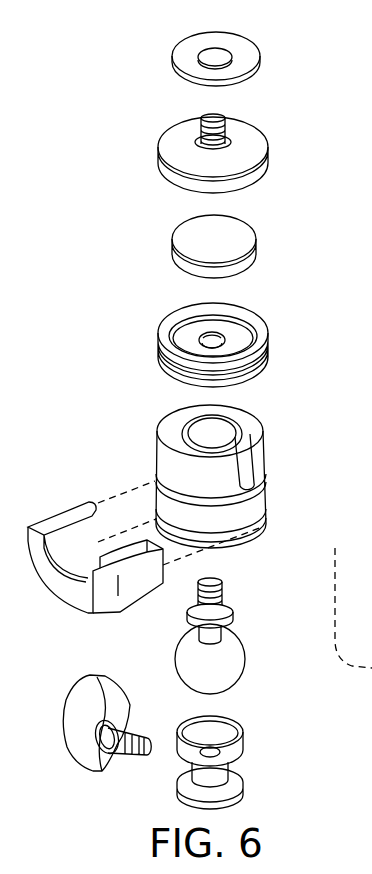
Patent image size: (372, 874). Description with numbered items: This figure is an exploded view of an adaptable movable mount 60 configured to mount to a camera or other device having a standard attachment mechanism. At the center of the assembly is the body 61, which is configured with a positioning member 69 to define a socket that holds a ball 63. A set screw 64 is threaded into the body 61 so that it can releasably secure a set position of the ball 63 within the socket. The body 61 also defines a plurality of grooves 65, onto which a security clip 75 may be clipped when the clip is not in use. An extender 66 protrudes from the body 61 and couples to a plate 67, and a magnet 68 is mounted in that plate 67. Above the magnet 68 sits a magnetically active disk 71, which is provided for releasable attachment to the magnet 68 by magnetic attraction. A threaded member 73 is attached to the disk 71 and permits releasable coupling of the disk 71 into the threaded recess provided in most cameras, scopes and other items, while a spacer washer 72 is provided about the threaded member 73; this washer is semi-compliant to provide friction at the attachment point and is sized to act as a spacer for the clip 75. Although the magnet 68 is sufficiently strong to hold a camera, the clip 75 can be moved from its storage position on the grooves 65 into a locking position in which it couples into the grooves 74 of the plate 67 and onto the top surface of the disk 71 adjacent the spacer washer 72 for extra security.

The adaptable movable mount 60 is at (68, 157).
The body 61 is at (246, 476).
The ball 63 is at (232, 670).
The set screw 64 is at (92, 758).
The grooves 65 is at (268, 532).
The extender 66 is at (240, 621).
The plate 67 is at (208, 345).
The magnet 68 is at (245, 243).
The positioning member 69 is at (243, 753).
The magnetically active disk 71 is at (252, 136).
The spacer washer 72 is at (253, 58).
The threaded member 73 is at (209, 118).
The grooves of plate 74 is at (160, 355).
The security clip 75 is at (52, 520).